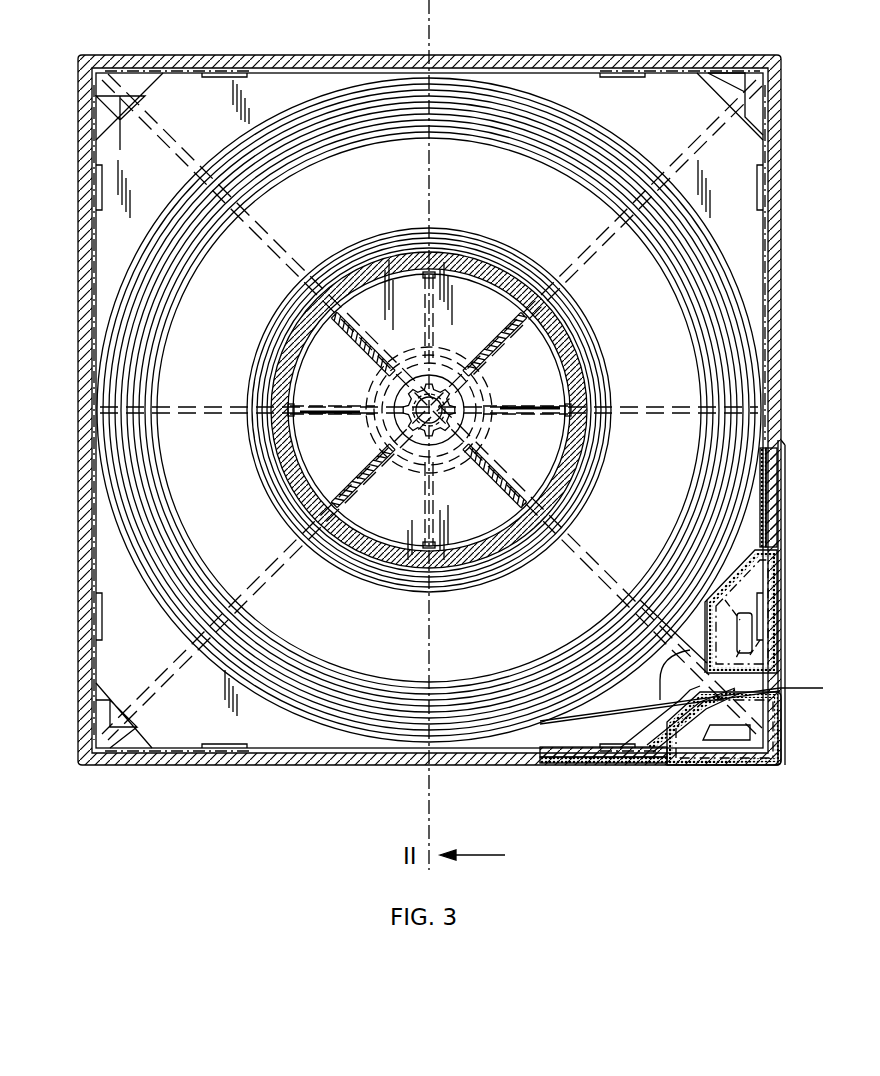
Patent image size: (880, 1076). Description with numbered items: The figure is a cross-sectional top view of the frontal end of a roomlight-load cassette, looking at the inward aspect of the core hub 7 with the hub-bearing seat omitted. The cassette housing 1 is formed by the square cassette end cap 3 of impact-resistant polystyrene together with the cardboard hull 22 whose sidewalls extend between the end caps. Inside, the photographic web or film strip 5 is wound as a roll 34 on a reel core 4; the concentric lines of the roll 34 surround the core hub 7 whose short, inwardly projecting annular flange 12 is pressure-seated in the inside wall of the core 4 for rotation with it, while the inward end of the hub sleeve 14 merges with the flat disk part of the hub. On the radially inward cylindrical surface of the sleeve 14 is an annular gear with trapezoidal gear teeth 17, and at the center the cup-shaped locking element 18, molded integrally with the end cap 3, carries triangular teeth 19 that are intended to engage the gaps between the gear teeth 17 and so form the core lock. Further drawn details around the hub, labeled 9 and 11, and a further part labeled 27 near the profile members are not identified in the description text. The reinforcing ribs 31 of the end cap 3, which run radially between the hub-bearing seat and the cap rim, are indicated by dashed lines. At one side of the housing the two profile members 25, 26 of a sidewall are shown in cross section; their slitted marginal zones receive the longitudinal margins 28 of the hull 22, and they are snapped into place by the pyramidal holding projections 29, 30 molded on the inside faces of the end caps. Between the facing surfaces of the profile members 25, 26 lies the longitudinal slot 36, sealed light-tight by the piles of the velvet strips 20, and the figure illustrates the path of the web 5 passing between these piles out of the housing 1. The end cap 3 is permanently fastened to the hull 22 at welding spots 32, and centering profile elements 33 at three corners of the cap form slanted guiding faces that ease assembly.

The housing 1 is at (292, 55).
The right-hand square cassette end cap 3 is at (660, 100).
The reel core 4 is at (478, 558).
The film strip 5 is at (527, 100).
The core hub 7 is at (480, 274).
The bearing circle 9 is at (478, 425).
The spokes 11 is at (334, 410).
The annular flange 12 is at (448, 282).
The sleeve part 14 is at (405, 465).
The gear teeth 17 is at (450, 398).
The locking element 18 is at (470, 365).
The teeth 19 is at (420, 422).
The velvet strips 20 is at (770, 655).
The hull 22 is at (170, 73).
The profile member 25 is at (712, 765).
The profile member 26 is at (780, 575).
The beaded strip 27 is at (765, 490).
The longitudinal margins 28 is at (770, 520).
The pyramidal holding projection 29 is at (740, 740).
The pyramidal holding projection 30 is at (752, 630).
The reinforcing ribs 31 is at (432, 138).
The welding spots 32 is at (102, 180).
The centering profile elements 33 is at (118, 80).
The roll 34 is at (568, 110).
The slot 36 is at (700, 690).